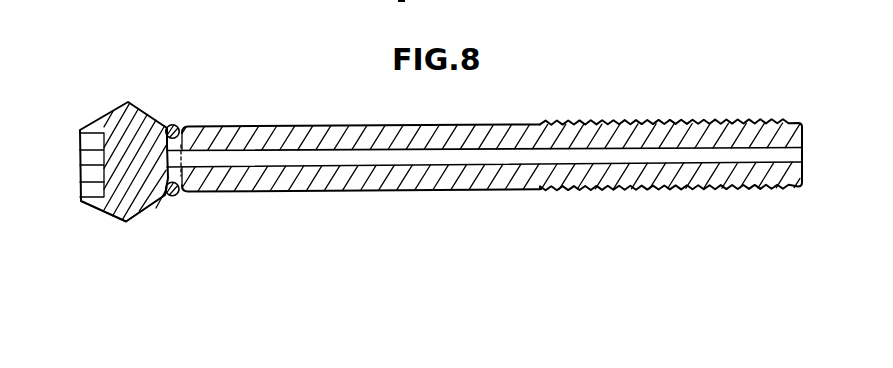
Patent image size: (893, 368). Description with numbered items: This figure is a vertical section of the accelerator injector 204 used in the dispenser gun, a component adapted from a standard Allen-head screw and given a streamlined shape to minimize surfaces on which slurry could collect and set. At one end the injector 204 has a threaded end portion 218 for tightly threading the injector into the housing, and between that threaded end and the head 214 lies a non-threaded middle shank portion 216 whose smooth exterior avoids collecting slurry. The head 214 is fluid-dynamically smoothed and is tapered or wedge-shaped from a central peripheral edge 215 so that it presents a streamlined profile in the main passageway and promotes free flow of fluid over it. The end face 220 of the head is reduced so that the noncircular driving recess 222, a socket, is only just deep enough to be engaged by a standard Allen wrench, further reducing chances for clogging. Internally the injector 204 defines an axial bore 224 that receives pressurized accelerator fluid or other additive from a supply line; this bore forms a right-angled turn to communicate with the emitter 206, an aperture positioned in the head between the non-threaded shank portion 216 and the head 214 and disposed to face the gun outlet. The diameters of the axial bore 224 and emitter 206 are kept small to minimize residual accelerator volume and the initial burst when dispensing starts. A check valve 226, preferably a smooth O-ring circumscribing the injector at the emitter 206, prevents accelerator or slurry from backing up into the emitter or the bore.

The injector 204 is at (550, 93).
The emitter 206 is at (168, 198).
The head 214 is at (127, 103).
The central peripheral edge 215 is at (125, 223).
The non-threaded middle shank portion 216 is at (357, 122).
The threaded end portion 218 is at (645, 122).
The end face 220 is at (78, 137).
The noncircular driving recess 222 is at (85, 185).
The axial bore 224 is at (460, 170).
The check valve 226 is at (174, 124).